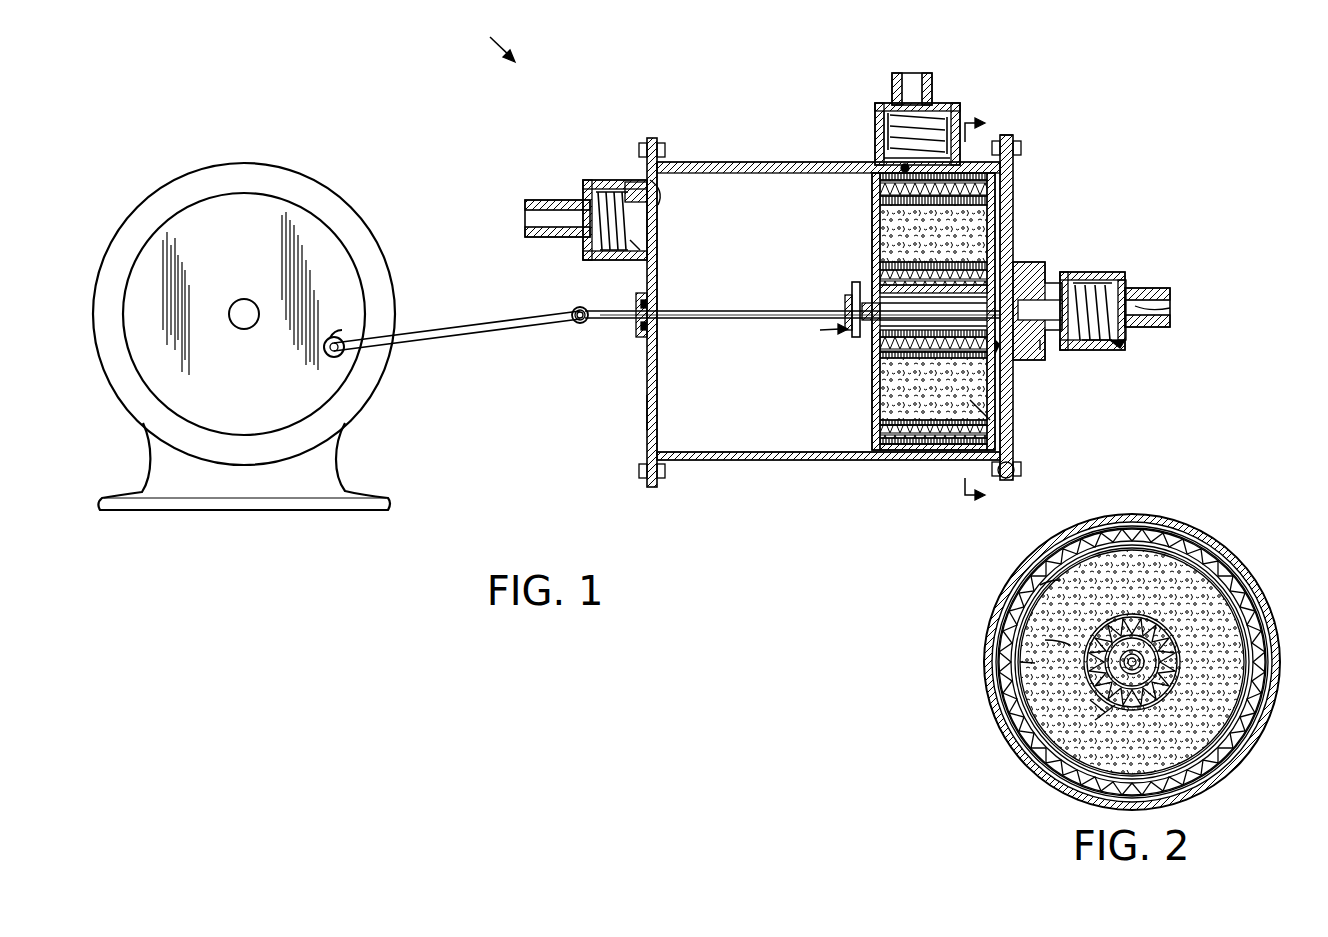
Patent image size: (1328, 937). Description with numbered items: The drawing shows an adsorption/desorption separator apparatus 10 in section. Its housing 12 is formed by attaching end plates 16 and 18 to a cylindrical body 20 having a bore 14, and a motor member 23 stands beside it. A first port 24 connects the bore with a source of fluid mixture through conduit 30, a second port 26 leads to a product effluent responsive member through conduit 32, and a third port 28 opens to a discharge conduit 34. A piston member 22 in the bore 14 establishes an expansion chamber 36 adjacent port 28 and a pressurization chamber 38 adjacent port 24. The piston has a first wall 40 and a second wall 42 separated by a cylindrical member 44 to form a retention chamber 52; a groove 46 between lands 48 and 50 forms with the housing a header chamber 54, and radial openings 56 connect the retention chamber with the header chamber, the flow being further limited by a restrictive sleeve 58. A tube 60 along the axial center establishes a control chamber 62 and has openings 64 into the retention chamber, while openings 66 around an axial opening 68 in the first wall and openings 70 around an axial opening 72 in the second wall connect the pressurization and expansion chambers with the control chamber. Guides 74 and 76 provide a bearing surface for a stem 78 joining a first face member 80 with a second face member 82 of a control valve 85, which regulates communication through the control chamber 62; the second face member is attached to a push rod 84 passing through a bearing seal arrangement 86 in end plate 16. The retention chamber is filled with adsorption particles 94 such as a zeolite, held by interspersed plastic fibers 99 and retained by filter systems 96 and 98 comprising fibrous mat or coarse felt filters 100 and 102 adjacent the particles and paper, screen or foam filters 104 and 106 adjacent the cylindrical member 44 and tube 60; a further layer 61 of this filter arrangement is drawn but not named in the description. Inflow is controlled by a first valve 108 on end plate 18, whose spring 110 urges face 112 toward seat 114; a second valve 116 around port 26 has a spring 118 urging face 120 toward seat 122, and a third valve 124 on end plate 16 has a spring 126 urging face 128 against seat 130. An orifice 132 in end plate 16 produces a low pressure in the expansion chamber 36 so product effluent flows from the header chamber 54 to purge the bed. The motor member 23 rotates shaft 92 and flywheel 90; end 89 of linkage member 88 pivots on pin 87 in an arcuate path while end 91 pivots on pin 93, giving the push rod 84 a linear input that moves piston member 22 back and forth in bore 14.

In FIG. 1, the separator apparatus 10 is at (491, 37).
In FIG. 1, the housing 12 is at (692, 492).
In FIG. 1, the bore 14 is at (730, 450).
In FIG. 1, the end plate 16 is at (648, 355).
In FIG. 1, the end plate 18 is at (1013, 408).
In FIG. 1, the cylindrical body 20 is at (775, 460).
In FIG. 1, the piston member 22 is at (822, 392).
In FIG. 1, the motor member 23 is at (307, 137).
In FIG. 1, the first port 24 is at (1062, 275).
In FIG. 1, the second port 26 is at (900, 170).
In FIG. 1, the third port 28 is at (650, 180).
In FIG. 1, the conduit 30 is at (1160, 292).
In FIG. 1, the conduit 32 is at (927, 82).
In FIG. 1, the discharge conduit 34 is at (527, 202).
In FIG. 1, the expansion chamber 36 is at (765, 313).
In FIG. 1, the pressurization chamber 38 is at (1032, 148).
In FIG. 1, the first wall 40 is at (992, 220).
In FIG. 1, the second wall 42 is at (892, 432).
In FIG. 1, the cylindrical member 44 is at (1000, 178).
In FIG. 2, the cylindrical member 44 is at (1205, 553).
In FIG. 2, the groove 46 is at (1222, 568).
In FIG. 1, the land 48 is at (1003, 478).
In FIG. 1, the land 50 is at (882, 448).
In FIG. 1, the retention chamber 52 is at (876, 440).
In FIG. 1, the header chamber 54 is at (905, 446).
In FIG. 2, the header chamber 54 is at (1195, 538).
In FIG. 2, the radial openings 56 is at (1236, 600).
In FIG. 1, the restrictive sleeve 58 is at (930, 448).
In FIG. 2, the restrictive sleeve 58 is at (1147, 525).
In FIG. 2, the tube 60 is at (1075, 548).
In FIG. 1, the filter layer 61 is at (890, 358).
In FIG. 2, the filter layer 61 is at (1085, 760).
In FIG. 1, the control chamber 62 is at (980, 268).
In FIG. 1, the openings 64 is at (890, 340).
In FIG. 2, the openings 64 is at (1110, 672).
In FIG. 1, the openings 66 is at (1010, 278).
In FIG. 1, the axial opening 68 is at (1022, 332).
In FIG. 1, the openings 70 is at (893, 310).
In FIG. 1, the axial opening 72 is at (855, 296).
In FIG. 1, the guide 74 is at (900, 282).
In FIG. 1, the guide 76 is at (940, 320).
In FIG. 1, the stem 78 is at (890, 392).
In FIG. 1, the first face member 80 is at (1017, 292).
In FIG. 1, the second face member 82 is at (852, 300).
In FIG. 1, the push rod 84 is at (665, 313).
In FIG. 2, the push rod 84 is at (1132, 662).
In FIG. 1, the control valve 85 is at (819, 330).
In FIG. 1, the bearing seal arrangement 86 is at (642, 320).
In FIG. 1, the pin 87 is at (345, 340).
In FIG. 1, the pivotal linkage 88 is at (458, 332).
In FIG. 1, the end 89 is at (341, 354).
In FIG. 1, the flywheel 90 is at (305, 223).
In FIG. 1, the end 91 is at (574, 325).
In FIG. 1, the shaft 92 is at (258, 308).
In FIG. 1, the pin 93 is at (580, 306).
In FIG. 1, the adsorption particles 94 is at (880, 208).
In FIG. 2, the adsorption particles 94 is at (1050, 618).
In FIG. 1, the filter system 96 is at (868, 187).
In FIG. 1, the filter system 98 is at (1000, 350).
In FIG. 1, the plastic fibers 99 is at (992, 405).
In FIG. 2, the plastic fibers 99 is at (1055, 642).
In FIG. 2, the fibrous mat or coarse felt filter 100 is at (1030, 672).
In FIG. 2, the fibrous mat or coarse felt filter 102 is at (1105, 705).
In FIG. 2, the paper, screen or foam filter 104 is at (1050, 592).
In FIG. 2, the paper, screen or foam filter 106 is at (1100, 720).
In FIG. 1, the first valve 108 is at (1122, 342).
In FIG. 1, the spring 110 is at (1115, 275).
In FIG. 1, the face 112 is at (1128, 292).
In FIG. 1, the seat 114 is at (1172, 308).
In FIG. 1, the second valve 116 is at (940, 115).
In FIG. 1, the spring 118 is at (890, 92).
In FIG. 1, the face 120 is at (885, 125).
In FIG. 1, the seat 122 is at (882, 140).
In FIG. 1, the third valve 124 is at (583, 253).
In FIG. 1, the spring 126 is at (585, 192).
In FIG. 1, the face 128 is at (625, 185).
In FIG. 1, the seat 130 is at (636, 236).
In FIG. 1, the orifice 132 is at (647, 410).